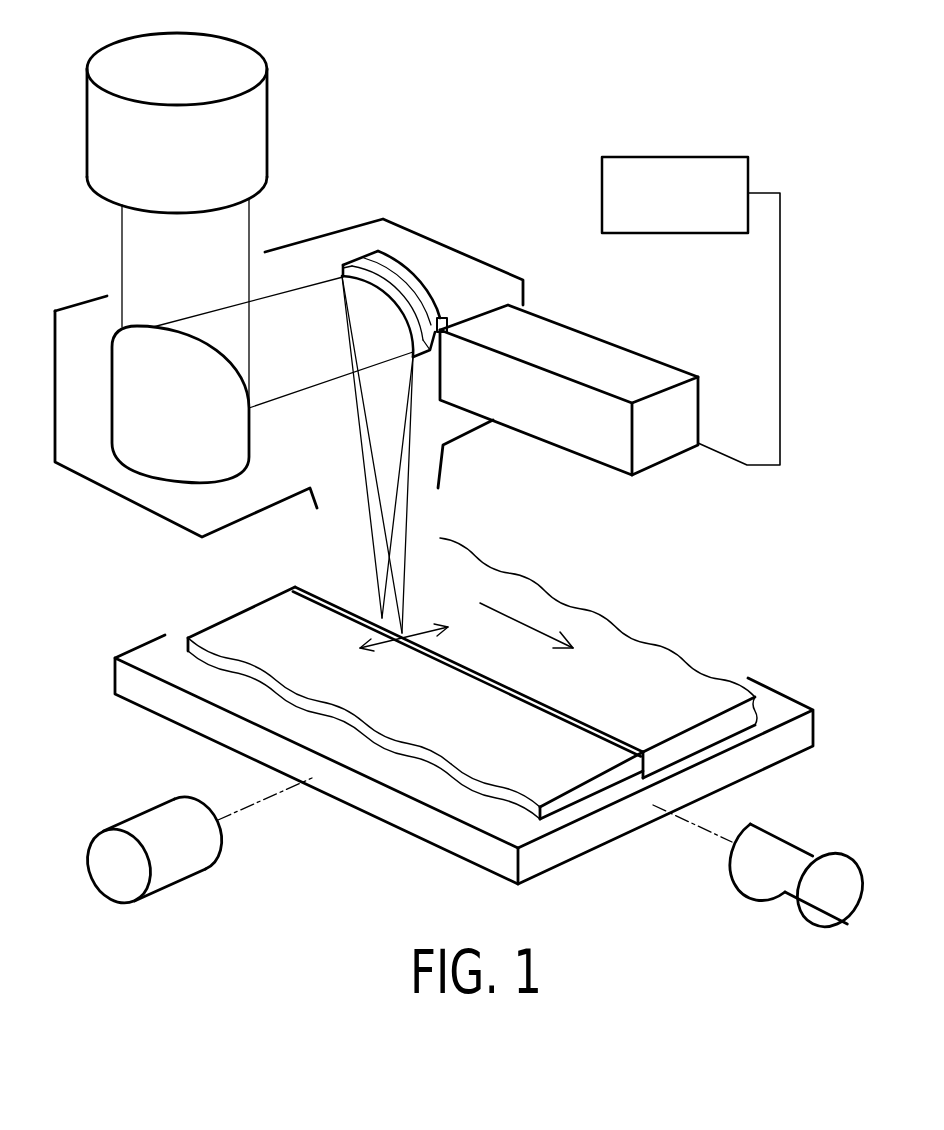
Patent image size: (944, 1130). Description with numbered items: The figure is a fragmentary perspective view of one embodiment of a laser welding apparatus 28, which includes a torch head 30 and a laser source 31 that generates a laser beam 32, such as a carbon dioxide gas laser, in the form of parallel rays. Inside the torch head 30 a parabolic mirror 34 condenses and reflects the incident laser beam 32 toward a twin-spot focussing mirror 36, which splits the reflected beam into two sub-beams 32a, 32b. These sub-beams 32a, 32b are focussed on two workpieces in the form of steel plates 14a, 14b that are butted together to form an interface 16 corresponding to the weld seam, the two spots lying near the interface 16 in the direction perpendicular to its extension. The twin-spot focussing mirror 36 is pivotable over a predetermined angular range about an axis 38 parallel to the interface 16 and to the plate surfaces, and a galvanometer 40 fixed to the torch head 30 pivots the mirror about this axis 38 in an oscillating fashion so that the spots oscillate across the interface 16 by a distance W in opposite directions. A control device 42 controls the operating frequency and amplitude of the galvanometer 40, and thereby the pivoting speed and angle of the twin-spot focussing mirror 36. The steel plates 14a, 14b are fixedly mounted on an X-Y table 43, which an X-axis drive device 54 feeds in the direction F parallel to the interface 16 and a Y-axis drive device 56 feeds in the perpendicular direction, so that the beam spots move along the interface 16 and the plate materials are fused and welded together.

The laser welding apparatus 28 is at (590, 95).
The torch head 30 is at (379, 179).
The laser source 31 is at (97, 137).
The laser beam 32 is at (250, 230).
The first sub-beam 32a is at (370, 532).
The second sub-beam 32b is at (407, 533).
The parabolic mirror 34 is at (130, 450).
The twin-spot focussing mirror 36 is at (403, 295).
The pivot axis 38 is at (442, 327).
The galvanometer 40 is at (558, 333).
The control device 42 is at (703, 163).
The X-Y table 43 is at (455, 842).
The steel plate 14a is at (625, 638).
The steel plate 14b is at (222, 635).
The interface 16 is at (574, 695).
The X-axis drive device 54 is at (763, 885).
The Y-axis drive device 56 is at (175, 870).